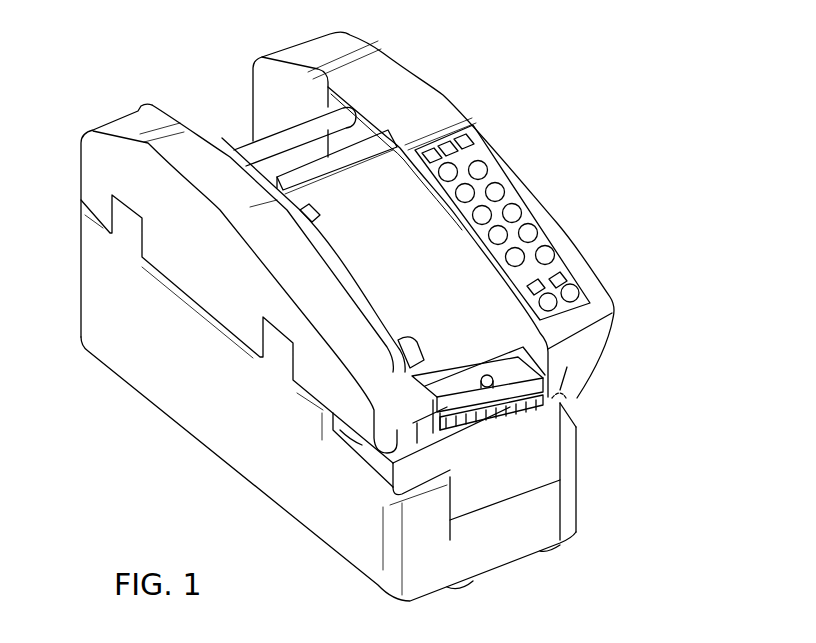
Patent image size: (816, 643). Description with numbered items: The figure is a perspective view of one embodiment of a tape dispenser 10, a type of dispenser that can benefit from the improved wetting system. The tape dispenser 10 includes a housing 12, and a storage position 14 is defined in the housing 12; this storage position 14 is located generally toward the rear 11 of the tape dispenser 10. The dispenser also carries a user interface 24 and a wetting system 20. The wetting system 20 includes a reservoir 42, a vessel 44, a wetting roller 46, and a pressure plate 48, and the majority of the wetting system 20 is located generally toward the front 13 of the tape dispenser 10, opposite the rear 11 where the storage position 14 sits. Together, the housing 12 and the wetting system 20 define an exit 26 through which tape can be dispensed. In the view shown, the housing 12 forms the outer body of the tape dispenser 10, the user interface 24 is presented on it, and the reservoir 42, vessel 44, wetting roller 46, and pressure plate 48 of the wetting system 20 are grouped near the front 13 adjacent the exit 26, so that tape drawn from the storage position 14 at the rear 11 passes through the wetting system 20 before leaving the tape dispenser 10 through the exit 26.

The tape dispenser 10 is at (561, 100).
The rear 11 is at (252, 82).
The housing 12 is at (407, 73).
The front 13 is at (530, 450).
The storage position 14 is at (219, 103).
The wetting system 20 is at (342, 446).
The user interface 24 is at (557, 263).
The exit 26 is at (552, 398).
The reservoir 42 is at (222, 270).
The vessel 44 is at (500, 492).
The wetting roller 46 is at (450, 437).
The pressure plate 48 is at (465, 392).